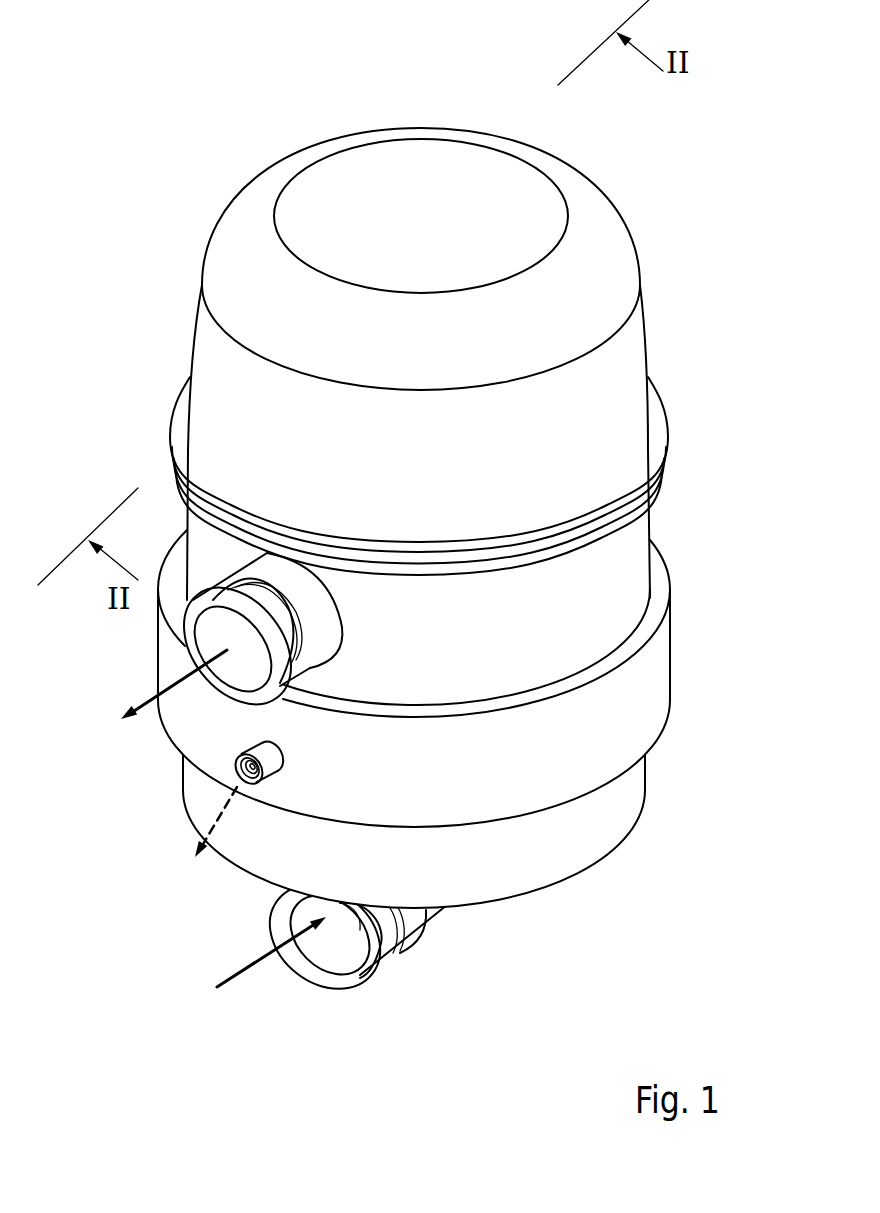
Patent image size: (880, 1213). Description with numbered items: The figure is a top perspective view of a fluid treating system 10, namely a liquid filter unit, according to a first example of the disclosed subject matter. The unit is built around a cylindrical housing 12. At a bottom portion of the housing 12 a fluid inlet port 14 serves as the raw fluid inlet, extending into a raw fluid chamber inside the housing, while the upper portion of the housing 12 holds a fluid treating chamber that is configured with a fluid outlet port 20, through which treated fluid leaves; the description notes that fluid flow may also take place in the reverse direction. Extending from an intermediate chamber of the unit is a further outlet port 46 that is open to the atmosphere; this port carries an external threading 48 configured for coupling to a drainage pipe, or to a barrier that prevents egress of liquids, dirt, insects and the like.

The fluid treating system 10 is at (368, 95).
The cylindrical housing 12 is at (630, 543).
The fluid inlet port 14 is at (342, 950).
The fluid outlet port 20 is at (215, 638).
The outlet port 46 is at (233, 772).
The external threading 48 is at (263, 773).